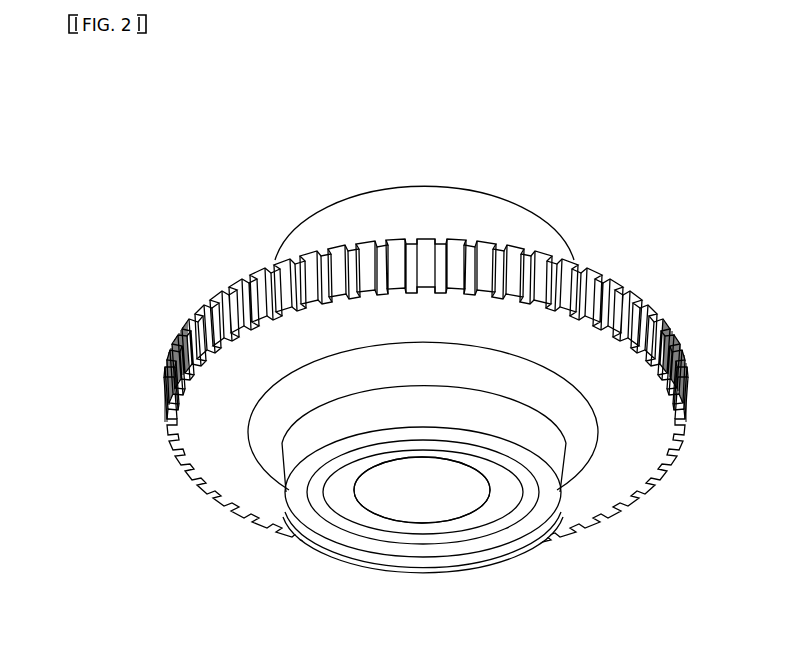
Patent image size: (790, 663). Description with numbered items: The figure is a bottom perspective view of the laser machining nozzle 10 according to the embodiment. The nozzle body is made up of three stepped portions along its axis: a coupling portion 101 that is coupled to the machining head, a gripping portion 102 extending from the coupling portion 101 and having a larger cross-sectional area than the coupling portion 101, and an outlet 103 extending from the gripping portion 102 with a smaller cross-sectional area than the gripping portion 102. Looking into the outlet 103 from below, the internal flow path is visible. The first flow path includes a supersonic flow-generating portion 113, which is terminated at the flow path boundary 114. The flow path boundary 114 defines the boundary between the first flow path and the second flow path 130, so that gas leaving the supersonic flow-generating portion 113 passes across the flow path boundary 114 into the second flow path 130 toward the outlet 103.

The knob 10 is at (516, 198).
The coupling portion 101 is at (322, 233).
The gripping portion 102 is at (166, 373).
The outlet 103 is at (302, 447).
The supersonic flow-generating portion 113 is at (414, 497).
The flow path boundary 114 is at (408, 501).
The second flow path 130 is at (497, 516).